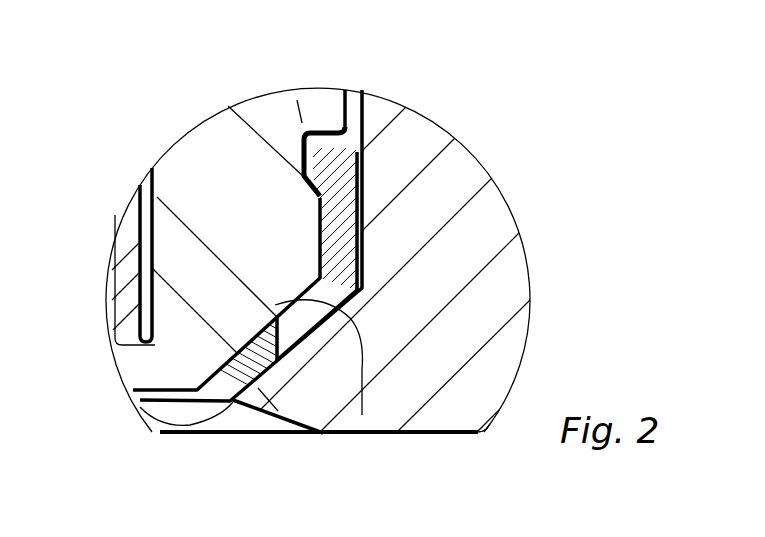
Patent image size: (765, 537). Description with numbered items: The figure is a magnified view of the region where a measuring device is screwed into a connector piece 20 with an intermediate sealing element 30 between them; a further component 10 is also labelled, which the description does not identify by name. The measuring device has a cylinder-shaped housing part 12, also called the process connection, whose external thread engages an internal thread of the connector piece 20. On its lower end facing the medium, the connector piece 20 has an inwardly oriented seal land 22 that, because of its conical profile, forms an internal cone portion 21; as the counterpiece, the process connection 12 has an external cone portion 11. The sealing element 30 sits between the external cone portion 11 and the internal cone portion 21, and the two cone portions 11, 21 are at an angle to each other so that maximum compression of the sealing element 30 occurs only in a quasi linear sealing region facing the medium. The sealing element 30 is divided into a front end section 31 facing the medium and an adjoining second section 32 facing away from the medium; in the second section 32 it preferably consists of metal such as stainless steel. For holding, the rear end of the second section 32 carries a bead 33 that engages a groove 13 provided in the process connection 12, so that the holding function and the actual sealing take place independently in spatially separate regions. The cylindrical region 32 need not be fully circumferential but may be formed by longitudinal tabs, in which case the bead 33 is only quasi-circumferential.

The carrier sheet / support element 10 is at (333, 133).
The external cone portion 11 is at (277, 313).
The cylinder-shaped housing part 12 is at (198, 185).
The groove 13 is at (312, 278).
The connector piece 20 is at (448, 268).
The internal cone portion 21 is at (362, 415).
The seal land 22 is at (278, 413).
The sealing element 30 is at (363, 180).
The front end section 31 is at (163, 432).
The second section 32 is at (277, 313).
The bead 33 is at (350, 110).